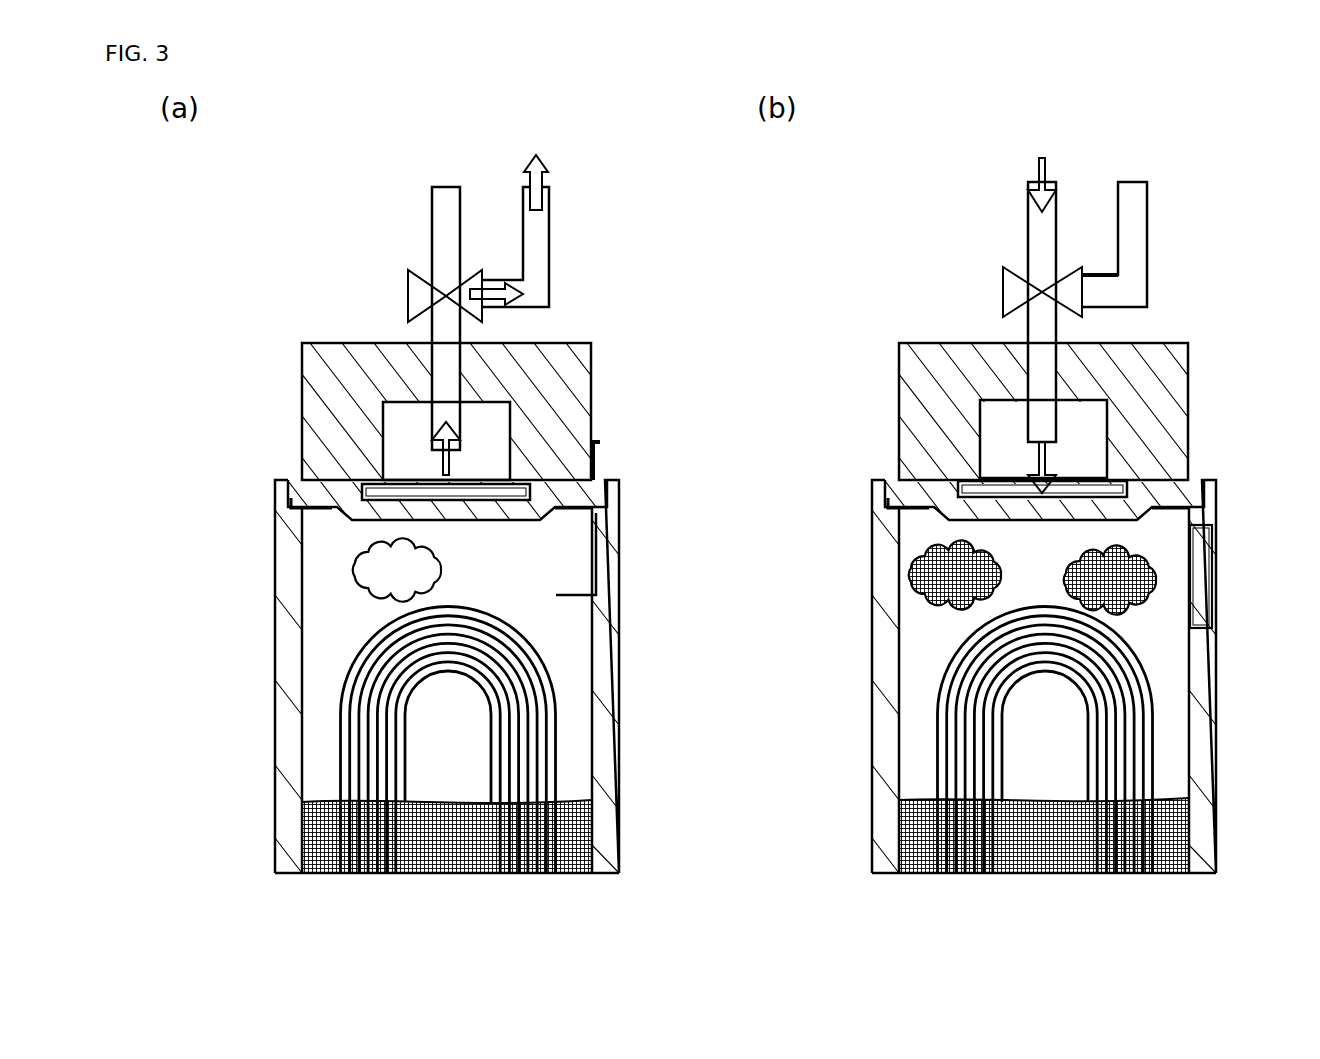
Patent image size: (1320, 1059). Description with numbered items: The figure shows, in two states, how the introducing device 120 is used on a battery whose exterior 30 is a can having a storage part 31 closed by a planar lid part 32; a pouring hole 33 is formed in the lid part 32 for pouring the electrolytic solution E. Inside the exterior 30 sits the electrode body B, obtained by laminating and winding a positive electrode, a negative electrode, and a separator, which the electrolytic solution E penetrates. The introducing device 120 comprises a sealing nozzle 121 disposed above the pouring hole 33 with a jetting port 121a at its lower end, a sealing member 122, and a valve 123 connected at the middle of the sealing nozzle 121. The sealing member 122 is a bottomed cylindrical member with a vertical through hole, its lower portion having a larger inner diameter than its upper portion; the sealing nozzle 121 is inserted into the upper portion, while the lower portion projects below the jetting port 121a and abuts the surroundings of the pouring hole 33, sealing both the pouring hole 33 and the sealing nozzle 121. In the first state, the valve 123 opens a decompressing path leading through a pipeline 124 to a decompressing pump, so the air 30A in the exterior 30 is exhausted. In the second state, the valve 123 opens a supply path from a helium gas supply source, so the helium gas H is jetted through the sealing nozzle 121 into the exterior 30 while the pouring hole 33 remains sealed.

The introducing device 120 is at (724, 333).
The sealing nozzle 121 is at (442, 415).
The jetting port 121a is at (436, 456).
The sealing member 122 is at (305, 380).
The valve 123 is at (410, 296).
The pipeline 124 is at (538, 246).
The exterior 30 is at (718, 676).
The air 30A is at (352, 578).
The storage part 31 is at (283, 690).
The lid part 32 is at (332, 512).
The pouring hole 33 is at (463, 510).
The electrode body B is at (513, 637).
The electrolytic solution E is at (302, 717).
The helium gas H is at (908, 580).